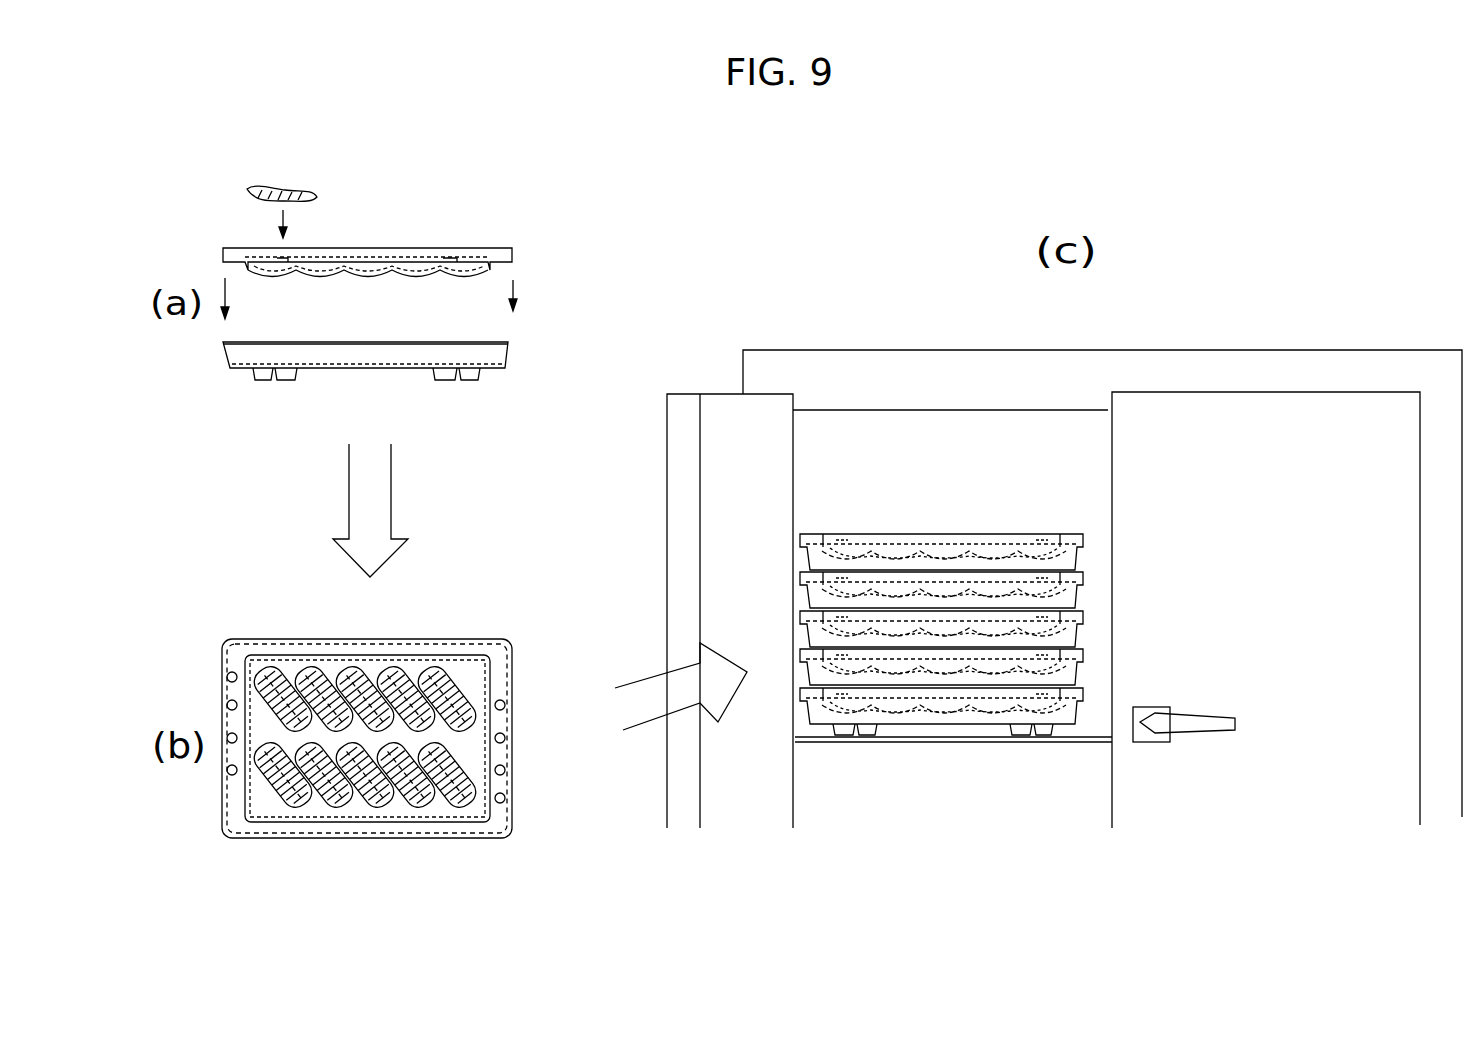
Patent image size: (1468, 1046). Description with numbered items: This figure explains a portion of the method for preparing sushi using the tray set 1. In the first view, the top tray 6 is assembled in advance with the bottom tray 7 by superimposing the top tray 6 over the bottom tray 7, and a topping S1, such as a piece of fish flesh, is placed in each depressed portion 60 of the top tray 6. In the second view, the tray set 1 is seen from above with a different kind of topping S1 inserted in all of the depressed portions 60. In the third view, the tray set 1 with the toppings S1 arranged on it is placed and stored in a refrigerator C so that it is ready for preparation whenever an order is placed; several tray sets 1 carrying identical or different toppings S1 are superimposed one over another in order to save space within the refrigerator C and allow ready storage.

The tray set 1 is at (727, 533).
The top tray 6 is at (406, 280).
The depressed portion 60 is at (280, 279).
The bottom tray 7 is at (408, 351).
The topping S1 is at (313, 193).
The refrigerator C is at (1257, 347).